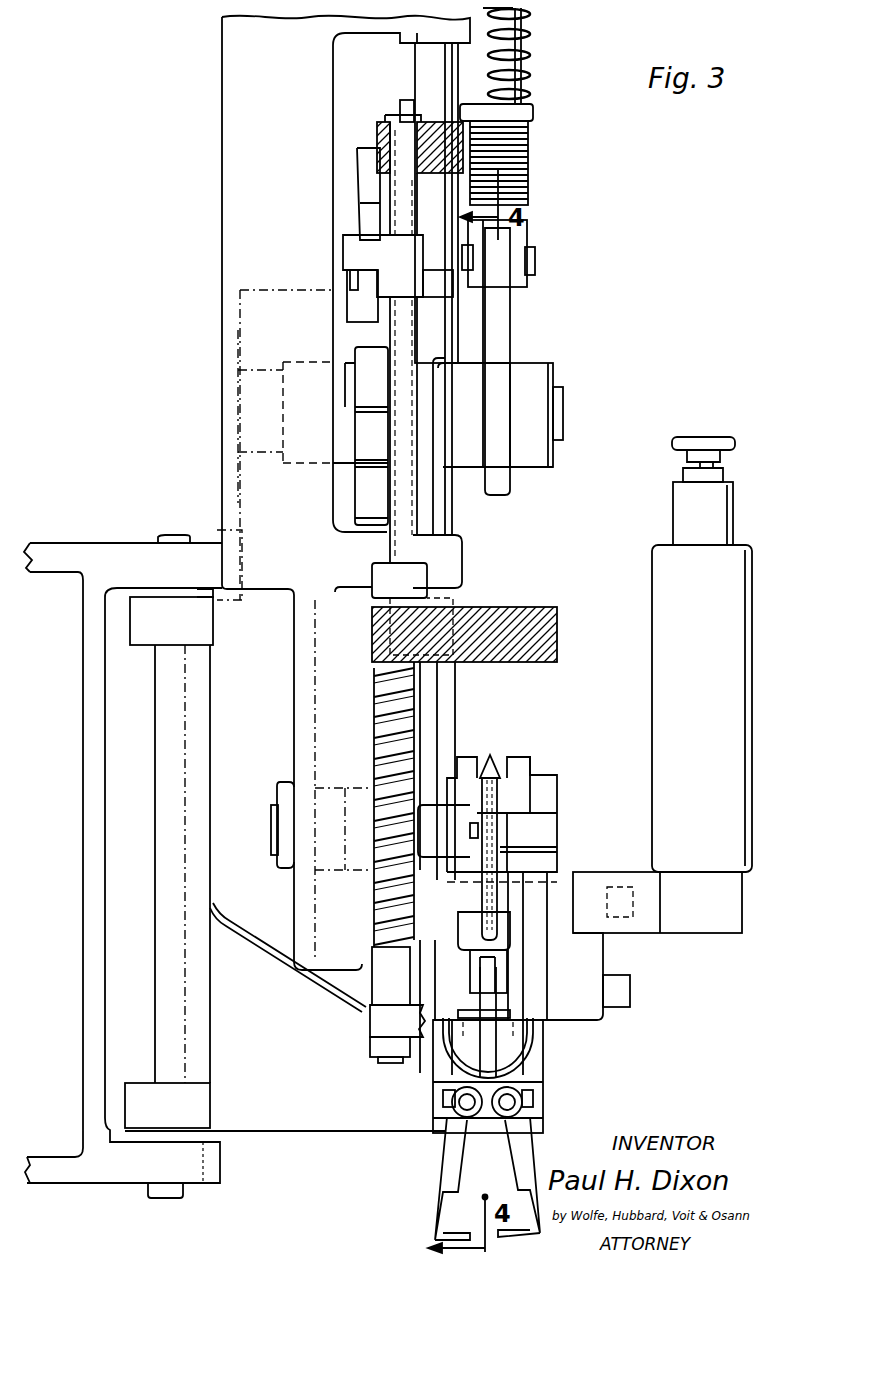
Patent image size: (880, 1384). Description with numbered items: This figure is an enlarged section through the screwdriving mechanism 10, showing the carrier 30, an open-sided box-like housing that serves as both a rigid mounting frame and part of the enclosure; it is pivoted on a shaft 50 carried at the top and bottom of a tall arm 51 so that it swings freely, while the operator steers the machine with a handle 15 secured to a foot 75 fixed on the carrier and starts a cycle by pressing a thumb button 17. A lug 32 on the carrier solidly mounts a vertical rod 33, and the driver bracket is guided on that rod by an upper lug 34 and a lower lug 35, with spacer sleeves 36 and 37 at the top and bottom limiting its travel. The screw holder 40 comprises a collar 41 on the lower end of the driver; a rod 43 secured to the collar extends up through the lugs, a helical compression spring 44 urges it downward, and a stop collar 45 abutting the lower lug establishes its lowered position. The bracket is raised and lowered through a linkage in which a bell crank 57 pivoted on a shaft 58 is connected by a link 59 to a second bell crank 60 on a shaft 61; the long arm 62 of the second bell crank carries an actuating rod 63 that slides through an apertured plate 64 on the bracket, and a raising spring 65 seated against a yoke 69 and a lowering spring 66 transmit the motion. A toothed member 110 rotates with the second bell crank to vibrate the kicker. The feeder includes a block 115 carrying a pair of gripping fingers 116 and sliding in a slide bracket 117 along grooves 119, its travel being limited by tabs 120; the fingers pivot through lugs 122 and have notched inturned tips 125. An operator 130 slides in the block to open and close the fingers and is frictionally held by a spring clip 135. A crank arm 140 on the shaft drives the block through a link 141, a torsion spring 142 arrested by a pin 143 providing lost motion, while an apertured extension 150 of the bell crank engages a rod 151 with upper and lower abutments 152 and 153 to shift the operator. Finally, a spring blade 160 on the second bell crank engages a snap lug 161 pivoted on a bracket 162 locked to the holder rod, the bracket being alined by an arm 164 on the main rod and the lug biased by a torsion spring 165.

The mechanism 10 is at (533, 302).
The handle 15 is at (752, 668).
The thumb button 17 is at (736, 443).
The carrier 30 is at (222, 183).
The lug 32 is at (457, 560).
The vertical rod 33 is at (445, 344).
The upper lug 34 is at (380, 126).
The lower lug 35 is at (557, 632).
The spacer sleeve 36 is at (415, 72).
The spacer sleeve 37 is at (446, 512).
The holder 40 is at (368, 1046).
The collar 41 is at (378, 1020).
The rod 43 is at (385, 942).
The helical compression spring 44 is at (375, 912).
The stop collar 45 is at (375, 580).
The shaft 50 is at (165, 834).
The arm 51 is at (55, 543).
The bell crank 57 is at (438, 712).
The shaft 58 is at (275, 826).
The link 59 is at (390, 549).
The second bell crank 60 is at (355, 500).
The shaft 61 is at (564, 412).
The long arm 62 is at (512, 314).
The actuating rod 63 is at (528, 70).
The apertured plate 64 is at (534, 108).
The raising spring 65 is at (528, 144).
The lowering spring 66 is at (530, 50).
The yoke 69 is at (527, 242).
The foot 75 is at (603, 960).
The toothed member 110 is at (550, 376).
The block 115 is at (520, 996).
The gripping fingers 116 is at (530, 1160).
The slide bracket 117 is at (545, 1064).
The grooves 119 is at (443, 1100).
The tabs 120 is at (520, 1110).
The lugs 122 is at (458, 1108).
The inturned tips 125 is at (442, 1232).
The operator 130 is at (488, 1014).
The spring clip 135 is at (534, 1042).
The crank arm 140 is at (557, 805).
The link 141 is at (501, 860).
The torsion spring 142 is at (530, 770).
The pin 143 is at (470, 824).
The apertured extension 150 is at (468, 930).
The rod 151 is at (498, 827).
The upper abutment 152 is at (492, 764).
The lower abutment 153 is at (472, 968).
The spring blade 160 is at (360, 176).
The snap lug 161 is at (356, 302).
The bracket 162 is at (352, 256).
The arm 164 is at (450, 288).
The torsion spring 165 is at (350, 282).